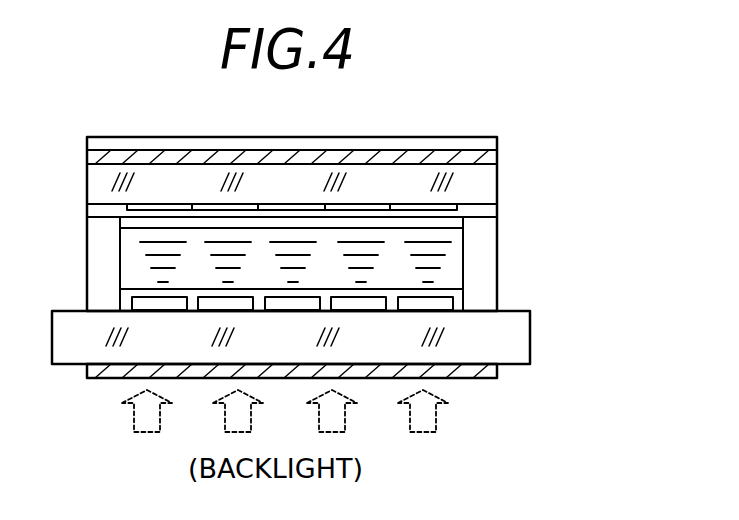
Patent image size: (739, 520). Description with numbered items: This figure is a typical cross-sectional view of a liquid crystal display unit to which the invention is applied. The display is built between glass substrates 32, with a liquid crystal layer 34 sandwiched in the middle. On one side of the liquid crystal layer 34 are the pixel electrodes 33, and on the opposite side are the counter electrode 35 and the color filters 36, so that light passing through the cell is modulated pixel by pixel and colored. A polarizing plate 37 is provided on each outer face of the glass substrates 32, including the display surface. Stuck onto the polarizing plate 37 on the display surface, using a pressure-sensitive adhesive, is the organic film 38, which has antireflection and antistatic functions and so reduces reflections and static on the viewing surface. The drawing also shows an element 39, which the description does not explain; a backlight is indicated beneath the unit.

The glass substrate 32 is at (478, 199).
The color filter / pixel electrode 33 is at (433, 307).
The liquid crystal layer 34 is at (450, 264).
The transparent electrode 35 is at (487, 214).
The alignment layer 36 is at (443, 212).
The polarizing plate 37 is at (472, 161).
The protective layer 38 is at (465, 145).
The seal / spacer 39 is at (127, 297).